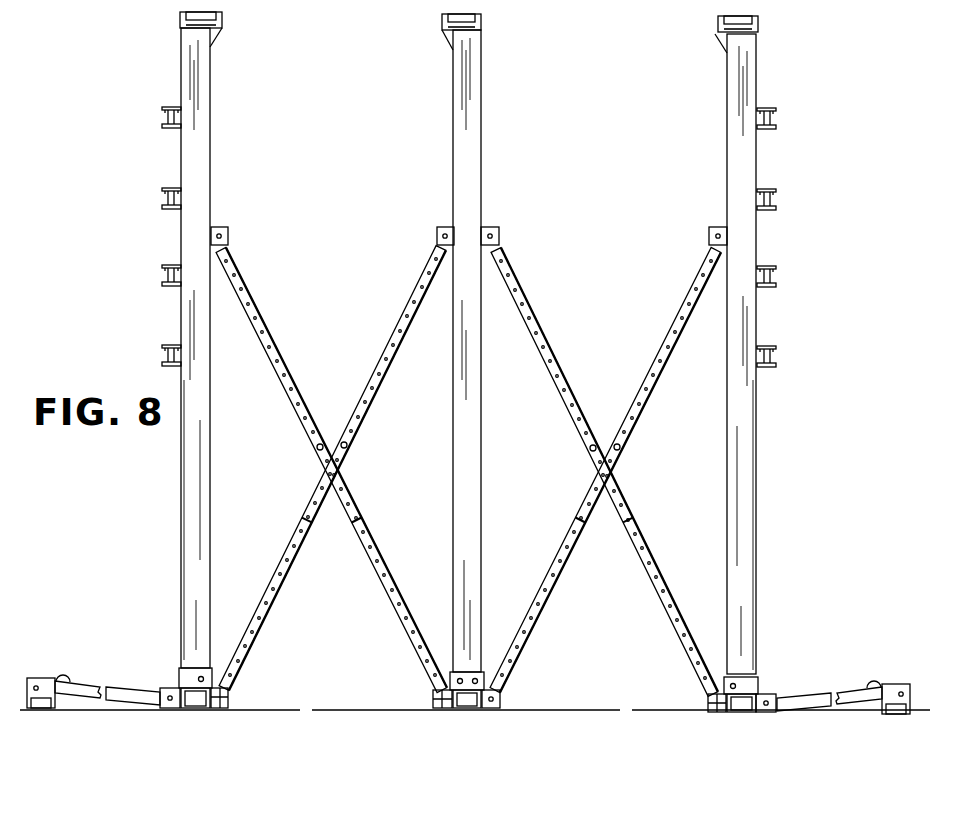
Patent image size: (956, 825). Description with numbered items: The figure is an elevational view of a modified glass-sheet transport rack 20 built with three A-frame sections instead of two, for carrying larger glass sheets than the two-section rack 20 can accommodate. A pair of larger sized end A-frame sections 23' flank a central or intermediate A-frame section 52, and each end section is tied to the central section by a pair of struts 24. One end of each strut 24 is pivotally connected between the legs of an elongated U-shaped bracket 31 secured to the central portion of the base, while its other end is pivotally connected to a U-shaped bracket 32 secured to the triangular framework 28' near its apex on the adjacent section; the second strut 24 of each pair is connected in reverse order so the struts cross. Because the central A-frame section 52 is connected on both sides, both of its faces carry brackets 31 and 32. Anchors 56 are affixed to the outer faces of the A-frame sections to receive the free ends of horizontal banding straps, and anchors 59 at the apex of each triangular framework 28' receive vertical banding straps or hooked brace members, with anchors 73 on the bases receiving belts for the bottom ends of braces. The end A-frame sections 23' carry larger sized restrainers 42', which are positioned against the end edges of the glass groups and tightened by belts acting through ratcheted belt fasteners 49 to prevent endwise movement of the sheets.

The rack 20 is at (776, 44).
The end A-frame section 23' is at (468, 351).
The strut 24 is at (355, 391).
The triangular framework 28' is at (505, 525).
The U-shaped bracket 31 is at (212, 688).
The U-shaped bracket 32 is at (222, 227).
The restrainer 42' is at (472, 662).
The ratcheted belt fastener 49 is at (63, 678).
The central A-frame section 52 is at (484, 85).
The anchor 56 is at (162, 200).
The anchor 59 is at (180, 22).
The anchor 73 is at (481, 16).